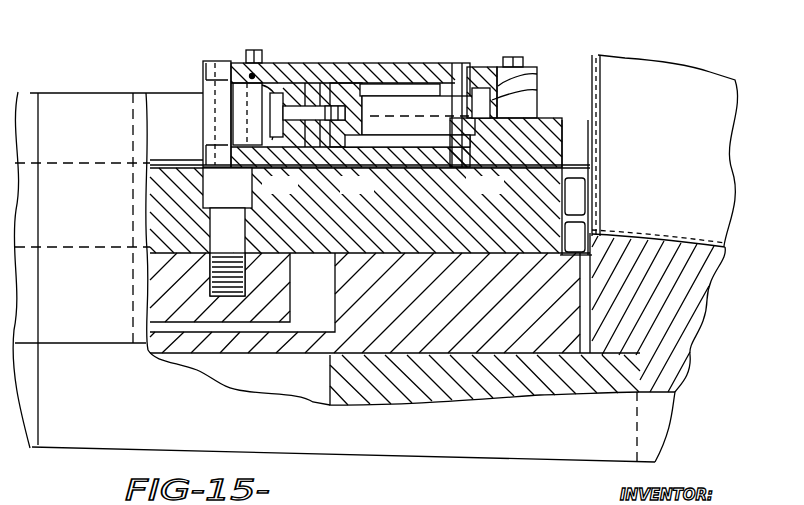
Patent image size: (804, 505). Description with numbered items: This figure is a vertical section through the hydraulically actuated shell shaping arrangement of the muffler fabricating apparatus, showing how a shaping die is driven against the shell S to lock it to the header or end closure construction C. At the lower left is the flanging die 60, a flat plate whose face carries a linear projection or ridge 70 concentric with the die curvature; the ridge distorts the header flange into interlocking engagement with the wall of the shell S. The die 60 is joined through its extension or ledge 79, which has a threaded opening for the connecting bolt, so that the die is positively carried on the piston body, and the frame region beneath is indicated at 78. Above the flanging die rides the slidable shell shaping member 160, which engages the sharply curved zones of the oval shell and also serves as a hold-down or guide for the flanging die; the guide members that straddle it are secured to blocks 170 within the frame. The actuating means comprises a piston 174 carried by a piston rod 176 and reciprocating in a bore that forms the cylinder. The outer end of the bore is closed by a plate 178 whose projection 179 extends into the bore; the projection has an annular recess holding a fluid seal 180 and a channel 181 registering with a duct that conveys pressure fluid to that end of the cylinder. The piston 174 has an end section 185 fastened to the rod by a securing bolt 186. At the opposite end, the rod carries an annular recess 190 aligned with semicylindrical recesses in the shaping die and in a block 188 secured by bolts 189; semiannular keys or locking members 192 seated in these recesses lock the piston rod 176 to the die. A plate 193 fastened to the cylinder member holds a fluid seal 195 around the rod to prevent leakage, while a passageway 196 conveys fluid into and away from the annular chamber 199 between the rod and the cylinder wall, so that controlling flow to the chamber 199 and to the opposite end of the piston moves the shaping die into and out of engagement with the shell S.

The die 60 is at (411, 347).
The linear projection or ridge 70 is at (562, 238).
The frame 78 is at (150, 421).
The extension or ledge 79 is at (280, 307).
The shell shaping member 160 is at (546, 108).
The block 170 is at (198, 157).
The piston 174 is at (338, 86).
The piston rod 176 is at (356, 92).
The plate 178 is at (213, 92).
The projection 179 is at (237, 90).
The fluid seal 180 is at (244, 72).
The channel 181 is at (270, 168).
The end section 185 is at (300, 100).
The securing bolt 186 is at (252, 76).
The block 188 is at (495, 66).
The bolt 189 is at (468, 67).
The annular recess 190 is at (492, 100).
The key or locking member 192 is at (543, 73).
The plate 193 is at (453, 78).
The fluid seal 195 is at (434, 90).
The passageway 196 is at (410, 121).
The annular chamber 199 is at (350, 168).
The shell S is at (682, 58).
The header or end closure construction C is at (665, 346).